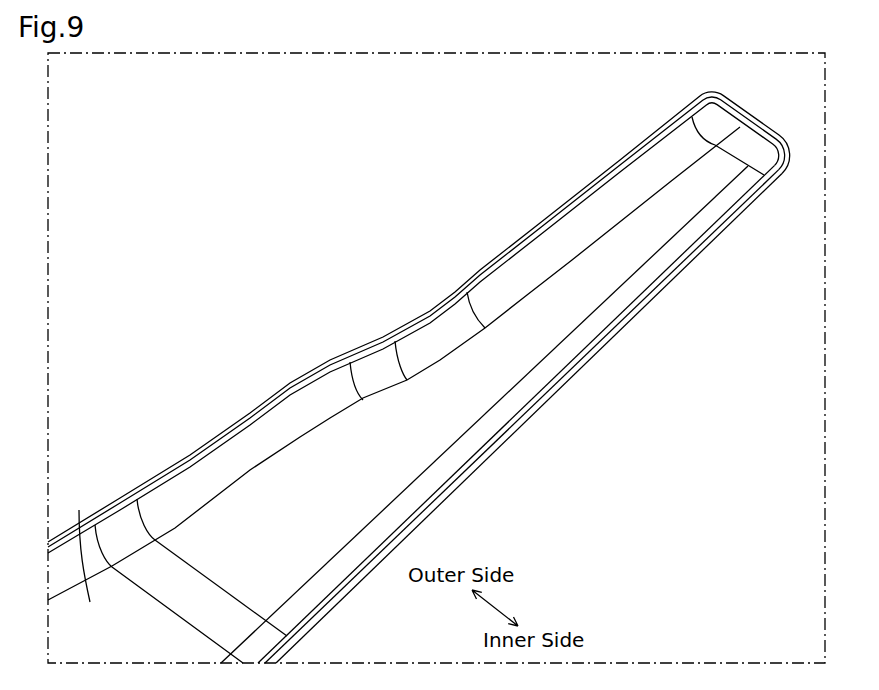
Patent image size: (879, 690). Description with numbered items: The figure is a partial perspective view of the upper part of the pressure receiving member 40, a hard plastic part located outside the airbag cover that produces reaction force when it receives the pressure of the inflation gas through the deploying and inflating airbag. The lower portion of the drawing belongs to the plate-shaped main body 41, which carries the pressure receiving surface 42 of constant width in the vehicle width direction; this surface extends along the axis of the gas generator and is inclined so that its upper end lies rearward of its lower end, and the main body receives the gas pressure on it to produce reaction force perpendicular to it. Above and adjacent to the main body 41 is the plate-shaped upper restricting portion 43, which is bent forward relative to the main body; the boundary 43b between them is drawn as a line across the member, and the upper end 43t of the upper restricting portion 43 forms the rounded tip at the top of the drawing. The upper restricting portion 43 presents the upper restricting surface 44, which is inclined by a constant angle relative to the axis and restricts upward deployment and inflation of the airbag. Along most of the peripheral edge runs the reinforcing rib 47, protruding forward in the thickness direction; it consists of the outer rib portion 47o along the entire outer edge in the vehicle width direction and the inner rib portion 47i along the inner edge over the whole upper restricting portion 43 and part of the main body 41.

The pressure receiving member 40 is at (211, 393).
The main body 41 is at (150, 556).
The pressure receiving surface 42 is at (79, 512).
The upper restricting portion 43 is at (484, 414).
The boundary 43b is at (213, 578).
The upper end 43t is at (762, 121).
The upper restricting surface 44 is at (560, 320).
The reinforcing rib 47 is at (416, 322).
The outer rib portion 47o is at (183, 490).
The inner rib portion 47i is at (492, 453).